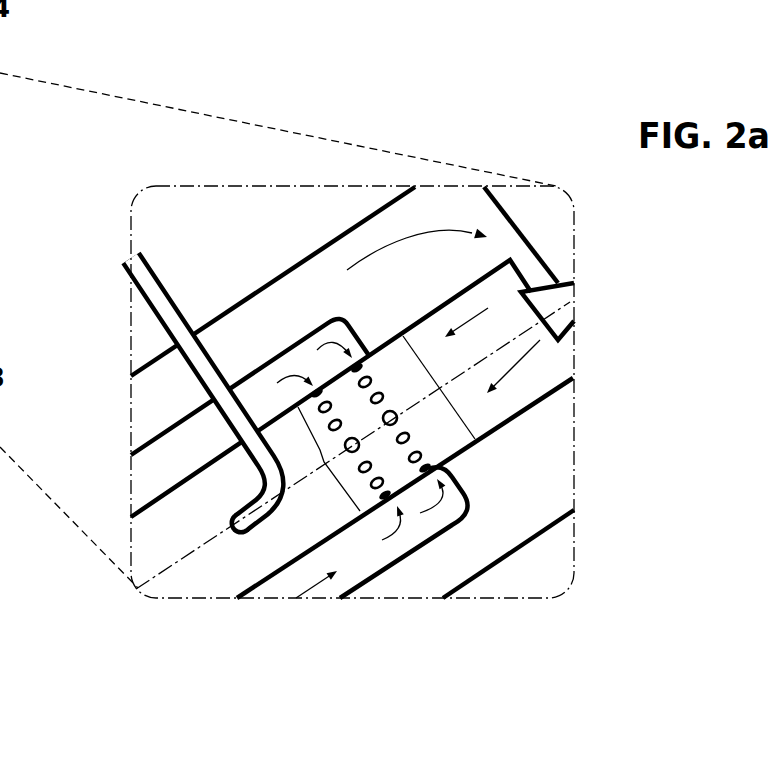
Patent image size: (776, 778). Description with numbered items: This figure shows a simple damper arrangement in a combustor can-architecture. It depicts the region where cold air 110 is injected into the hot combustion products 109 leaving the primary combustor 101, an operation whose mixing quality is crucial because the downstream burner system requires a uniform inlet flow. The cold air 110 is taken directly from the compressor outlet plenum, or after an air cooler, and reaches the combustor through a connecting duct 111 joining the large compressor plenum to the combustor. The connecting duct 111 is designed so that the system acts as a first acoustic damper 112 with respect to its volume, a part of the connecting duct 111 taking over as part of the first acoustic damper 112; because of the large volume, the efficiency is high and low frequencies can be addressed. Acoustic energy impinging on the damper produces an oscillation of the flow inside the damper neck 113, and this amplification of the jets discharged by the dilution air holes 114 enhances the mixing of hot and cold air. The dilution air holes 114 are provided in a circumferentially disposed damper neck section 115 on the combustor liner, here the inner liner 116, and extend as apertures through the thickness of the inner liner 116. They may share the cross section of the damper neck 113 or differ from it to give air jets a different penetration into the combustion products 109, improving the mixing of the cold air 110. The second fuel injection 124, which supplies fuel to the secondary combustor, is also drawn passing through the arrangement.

The primary combustor 101 is at (510, 360).
The hot combustion products 109 is at (468, 318).
The cold air 110 is at (316, 588).
The connecting duct 111 is at (173, 457).
The first acoustic damper 112 is at (420, 528).
The damper neck 113 is at (379, 375).
The dilution air holes 114 is at (415, 438).
The damper neck section 115 is at (336, 486).
The inner liner 116 is at (351, 544).
The second fuel injection 124 is at (163, 305).